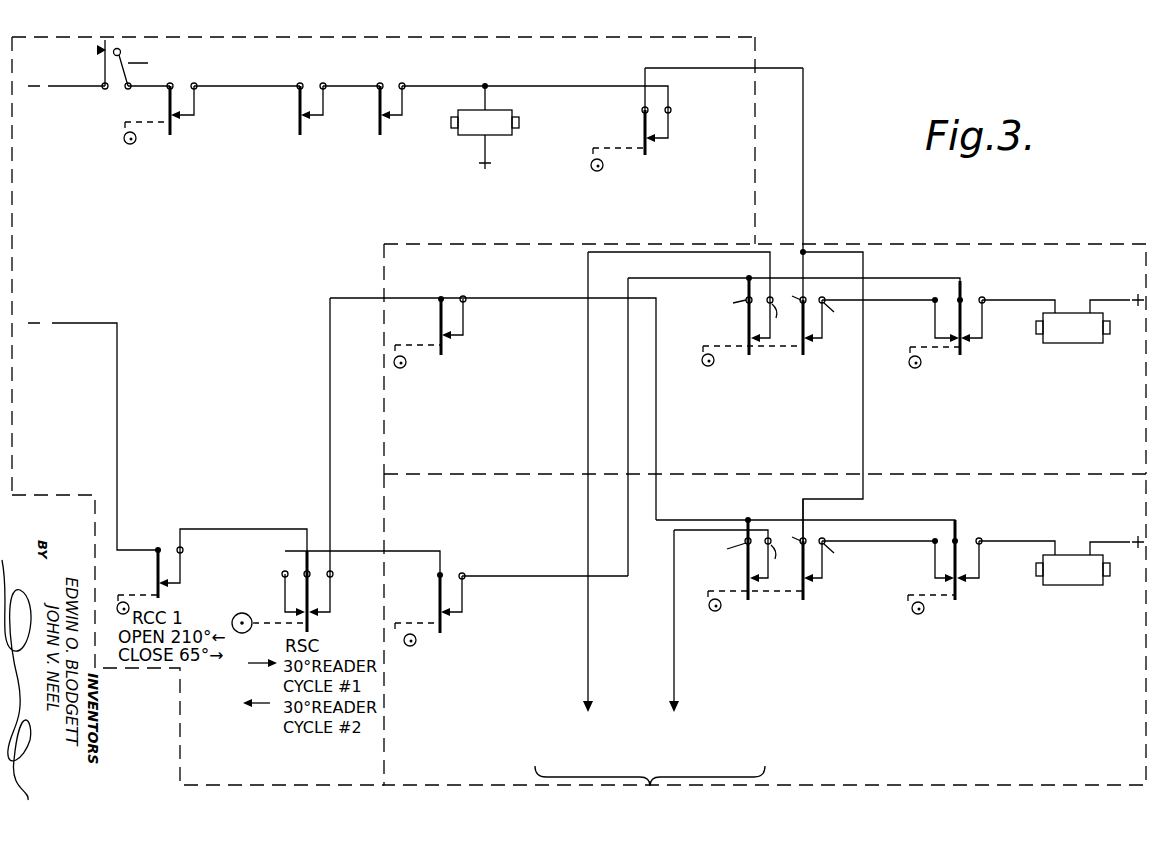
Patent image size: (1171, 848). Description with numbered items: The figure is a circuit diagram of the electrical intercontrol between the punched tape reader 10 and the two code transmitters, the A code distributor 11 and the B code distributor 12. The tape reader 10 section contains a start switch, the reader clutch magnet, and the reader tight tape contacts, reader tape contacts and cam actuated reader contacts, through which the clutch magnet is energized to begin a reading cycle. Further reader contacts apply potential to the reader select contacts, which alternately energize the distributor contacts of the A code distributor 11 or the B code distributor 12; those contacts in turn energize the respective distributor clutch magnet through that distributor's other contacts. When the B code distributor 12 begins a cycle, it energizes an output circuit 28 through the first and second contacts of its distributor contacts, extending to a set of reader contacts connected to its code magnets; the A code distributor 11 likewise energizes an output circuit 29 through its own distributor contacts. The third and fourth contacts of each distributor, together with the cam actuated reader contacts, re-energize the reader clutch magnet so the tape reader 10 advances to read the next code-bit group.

The punched tape reader 10 is at (757, 60).
The A code distributor 11 is at (988, 786).
The B code distributor 12 is at (936, 244).
The output circuit 28 is at (589, 657).
The output circuit 29 is at (675, 672).